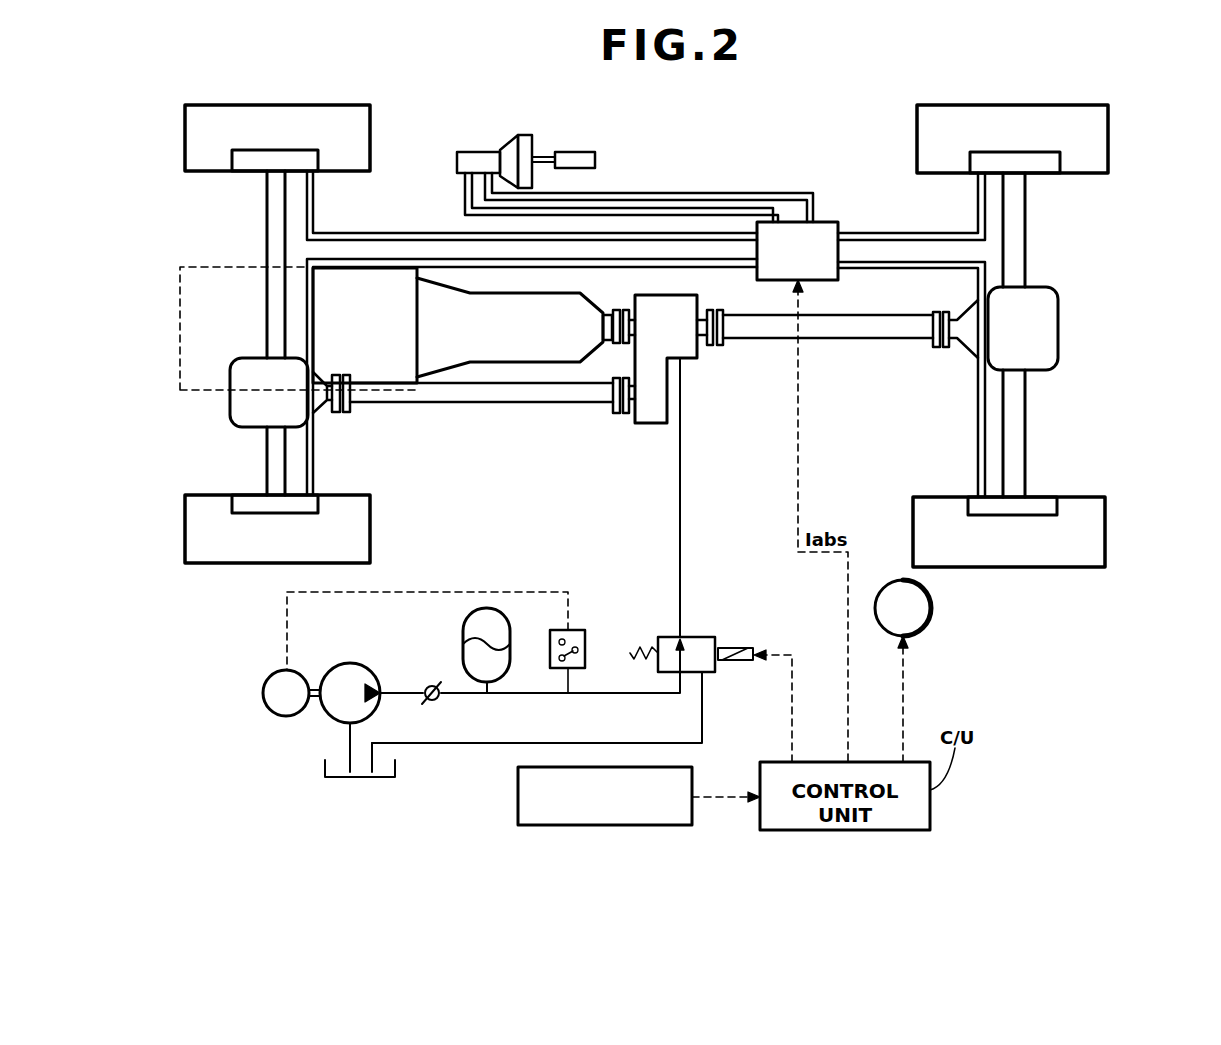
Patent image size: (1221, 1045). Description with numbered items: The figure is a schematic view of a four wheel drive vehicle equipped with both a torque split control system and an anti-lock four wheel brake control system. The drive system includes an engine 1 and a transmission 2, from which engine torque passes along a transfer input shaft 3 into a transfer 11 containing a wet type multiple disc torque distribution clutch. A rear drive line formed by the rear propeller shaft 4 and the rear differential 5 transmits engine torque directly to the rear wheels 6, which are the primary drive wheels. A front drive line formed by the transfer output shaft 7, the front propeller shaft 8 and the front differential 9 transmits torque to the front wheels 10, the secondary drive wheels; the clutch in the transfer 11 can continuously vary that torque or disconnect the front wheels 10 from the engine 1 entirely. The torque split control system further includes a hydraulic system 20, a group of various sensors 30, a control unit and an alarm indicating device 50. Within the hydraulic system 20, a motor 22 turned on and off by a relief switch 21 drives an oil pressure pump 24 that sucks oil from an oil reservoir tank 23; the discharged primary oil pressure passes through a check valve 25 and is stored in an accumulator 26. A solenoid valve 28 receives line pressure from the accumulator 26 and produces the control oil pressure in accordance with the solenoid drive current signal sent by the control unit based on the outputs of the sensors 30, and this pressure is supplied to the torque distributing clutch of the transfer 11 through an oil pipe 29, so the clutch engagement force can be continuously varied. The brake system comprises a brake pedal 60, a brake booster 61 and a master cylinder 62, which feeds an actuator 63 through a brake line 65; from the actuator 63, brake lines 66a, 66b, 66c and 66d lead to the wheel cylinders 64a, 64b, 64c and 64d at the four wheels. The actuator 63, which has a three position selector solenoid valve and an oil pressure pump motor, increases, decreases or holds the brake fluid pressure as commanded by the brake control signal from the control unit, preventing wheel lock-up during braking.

The engine 1 is at (368, 343).
The transmission 2 is at (530, 348).
The transfer input shaft 3 is at (632, 318).
The rear propeller shaft 4 is at (750, 340).
The rear differential 5 is at (1040, 287).
The rear wheels 6 is at (1090, 174).
The transfer output shaft 7 is at (630, 413).
The front propeller shaft 8 is at (515, 403).
The front differential 9 is at (230, 418).
The front wheels 10 is at (185, 172).
The transfer 11 is at (673, 348).
The hydraulic system 20 is at (532, 569).
The relief switch 21 is at (585, 630).
The motor 22 is at (263, 695).
The oil reservoir tank 23 is at (395, 770).
The oil pressure pump 24 is at (350, 663).
The check valve 25 is at (428, 685).
The accumulator 26 is at (510, 651).
The solenoid valve 28 is at (668, 637).
The oil pipe 29 is at (683, 442).
The sensors 30 is at (590, 826).
The alarm indicating device 50 is at (931, 610).
The brake pedal 60 is at (577, 152).
The brake booster 61 is at (526, 135).
The master cylinder 62 is at (467, 152).
The actuator 63 is at (838, 223).
The wheel cylinder 64a is at (305, 506).
The wheel cylinder 64b is at (312, 158).
The wheel cylinder 64c is at (1050, 507).
The wheel cylinder 64d is at (1053, 162).
The brake line 65 is at (692, 195).
The brake line 66a is at (313, 447).
The brake line 66b is at (365, 234).
The brake line 66c is at (977, 414).
The brake line 66d is at (898, 234).